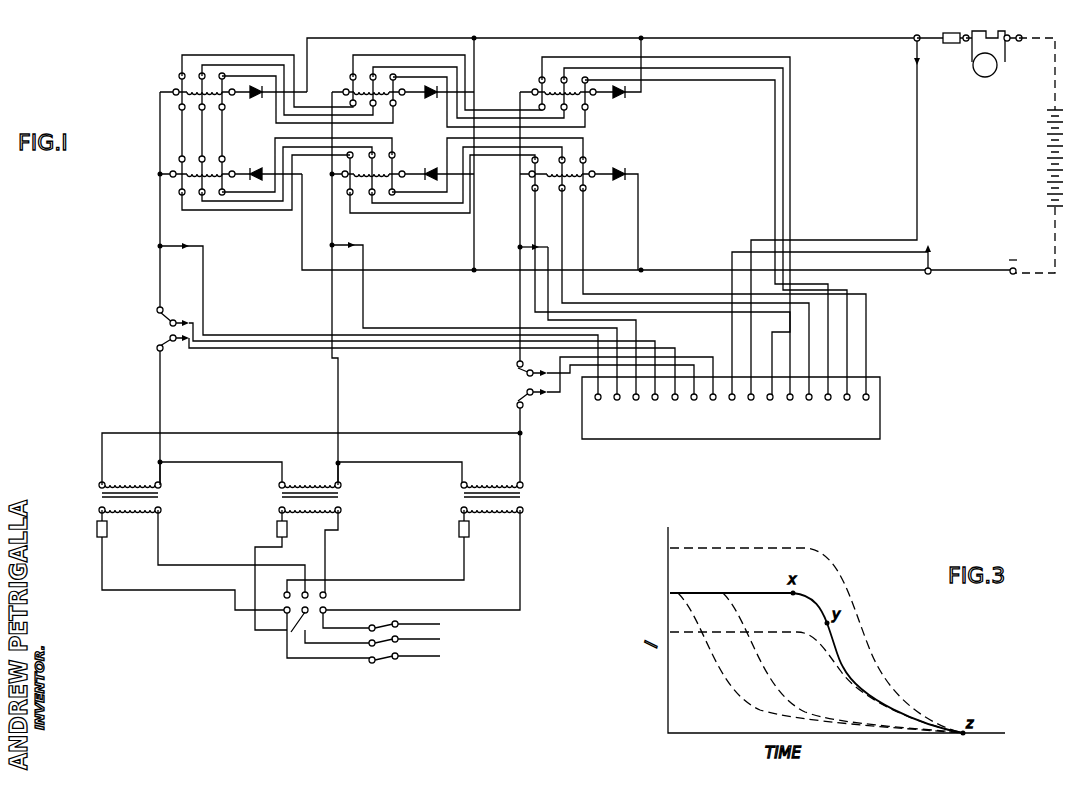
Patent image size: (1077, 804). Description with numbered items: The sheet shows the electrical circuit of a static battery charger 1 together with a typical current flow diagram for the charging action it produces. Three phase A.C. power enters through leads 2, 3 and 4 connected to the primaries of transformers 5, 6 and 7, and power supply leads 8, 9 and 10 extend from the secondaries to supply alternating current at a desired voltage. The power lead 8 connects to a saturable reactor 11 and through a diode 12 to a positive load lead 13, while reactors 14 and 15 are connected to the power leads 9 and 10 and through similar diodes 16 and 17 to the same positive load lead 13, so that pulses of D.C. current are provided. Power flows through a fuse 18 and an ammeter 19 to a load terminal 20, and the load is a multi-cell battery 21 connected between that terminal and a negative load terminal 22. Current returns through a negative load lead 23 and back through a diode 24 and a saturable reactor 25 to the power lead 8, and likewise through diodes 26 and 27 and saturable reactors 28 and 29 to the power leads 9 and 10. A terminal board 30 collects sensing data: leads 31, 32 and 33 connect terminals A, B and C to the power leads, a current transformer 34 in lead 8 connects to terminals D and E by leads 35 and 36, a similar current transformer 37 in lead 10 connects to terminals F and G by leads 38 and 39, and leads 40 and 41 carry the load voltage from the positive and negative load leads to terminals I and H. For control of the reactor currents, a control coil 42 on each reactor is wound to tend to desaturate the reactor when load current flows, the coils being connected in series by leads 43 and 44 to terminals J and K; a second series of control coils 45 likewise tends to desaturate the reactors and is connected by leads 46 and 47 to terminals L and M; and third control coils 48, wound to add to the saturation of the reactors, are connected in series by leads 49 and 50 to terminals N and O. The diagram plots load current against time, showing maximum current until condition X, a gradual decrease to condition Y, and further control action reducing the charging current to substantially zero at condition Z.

The static battery charger 1 is at (136, 373).
The lead 2 is at (283, 648).
The lead 3 is at (320, 646).
The lead 4 is at (336, 627).
The transformer 5 is at (97, 493).
The transformer 6 is at (341, 497).
The transformer 7 is at (460, 494).
The power supply lead 8 is at (158, 222).
The power supply lead 9 is at (339, 405).
The power supply lead 10 is at (519, 305).
The saturable reactor 11 is at (189, 86).
The diode 12 is at (258, 84).
The positive load lead 13 is at (376, 38).
The saturable reactor 14 is at (380, 88).
The saturable reactor 15 is at (548, 85).
The diode 16 is at (432, 85).
The diode 17 is at (624, 96).
The fuse 18 is at (951, 33).
The ammeter 19 is at (990, 36).
The load terminal 20 is at (1025, 37).
The multi-cell battery 21 is at (1040, 150).
The negative load terminal 22 is at (1013, 277).
The negative load lead 23 is at (405, 269).
The diode 24 is at (256, 165).
The saturable reactor 25 is at (212, 178).
The diode 26 is at (432, 166).
The diode 27 is at (623, 171).
The saturable reactor 28 is at (362, 179).
The saturable reactor 29 is at (552, 179).
The terminal board 30 is at (882, 438).
The lead 31 is at (204, 285).
The lead 32 is at (364, 294).
The lead 33 is at (552, 253).
The current transformer 34 is at (164, 341).
The lead 35 is at (266, 348).
The lead 36 is at (290, 341).
The current transformer 37 is at (513, 380).
The lead 38 is at (682, 364).
The lead 39 is at (704, 357).
The lead 40 is at (920, 144).
The lead 41 is at (862, 253).
The control coil 42 is at (180, 77).
The lead 43 is at (486, 110).
The lead 44 is at (540, 247).
The control coil 45 is at (376, 153).
The lead 46 is at (396, 196).
The lead 47 is at (829, 313).
The third control coil 48 is at (588, 157).
The lead 49 is at (849, 352).
The lead 50 is at (583, 223).